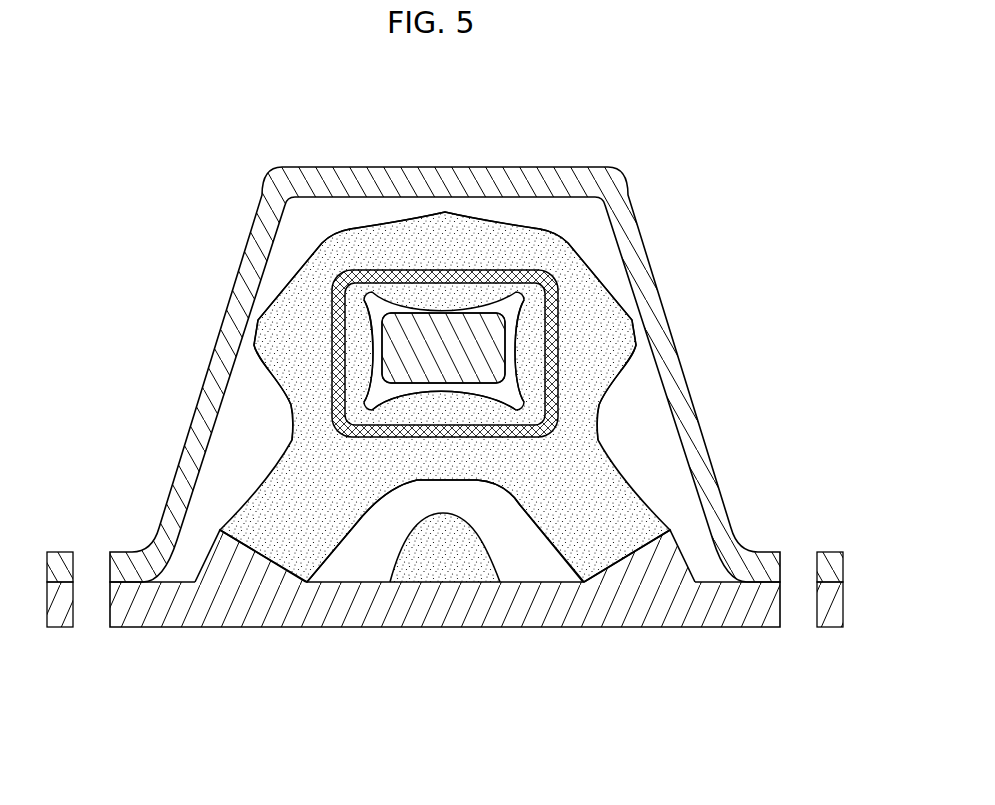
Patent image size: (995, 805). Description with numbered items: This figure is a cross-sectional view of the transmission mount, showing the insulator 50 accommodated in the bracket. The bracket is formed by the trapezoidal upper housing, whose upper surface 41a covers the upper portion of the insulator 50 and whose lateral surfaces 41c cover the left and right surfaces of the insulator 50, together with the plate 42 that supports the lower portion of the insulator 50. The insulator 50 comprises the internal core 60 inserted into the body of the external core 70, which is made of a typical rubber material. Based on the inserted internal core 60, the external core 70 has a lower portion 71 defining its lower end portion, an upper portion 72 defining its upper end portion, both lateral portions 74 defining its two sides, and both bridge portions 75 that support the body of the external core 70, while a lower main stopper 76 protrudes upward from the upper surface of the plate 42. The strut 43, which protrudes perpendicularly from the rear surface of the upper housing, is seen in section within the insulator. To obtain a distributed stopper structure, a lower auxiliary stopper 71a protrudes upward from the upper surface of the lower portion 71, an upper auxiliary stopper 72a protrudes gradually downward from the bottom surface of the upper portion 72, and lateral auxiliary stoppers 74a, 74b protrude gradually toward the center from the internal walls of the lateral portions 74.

The upper surface 41a is at (557, 187).
The lateral surfaces 41c is at (218, 373).
The plate 42 is at (413, 617).
The strut 43 is at (490, 347).
The insulator 50 is at (621, 456).
The internal core 60 is at (488, 275).
The external core 70 is at (587, 268).
The lower portion 71 is at (410, 460).
The lower auxiliary stopper 71a is at (453, 400).
The upper portion 72 is at (382, 247).
The upper auxiliary stopper 72a is at (434, 298).
The lateral portions 74 is at (273, 345).
The lateral auxiliary stopper 74a is at (363, 363).
The lateral auxiliary stopper 74b is at (527, 363).
The bridge portions 75 is at (285, 527).
The lower main stopper 76 is at (444, 553).